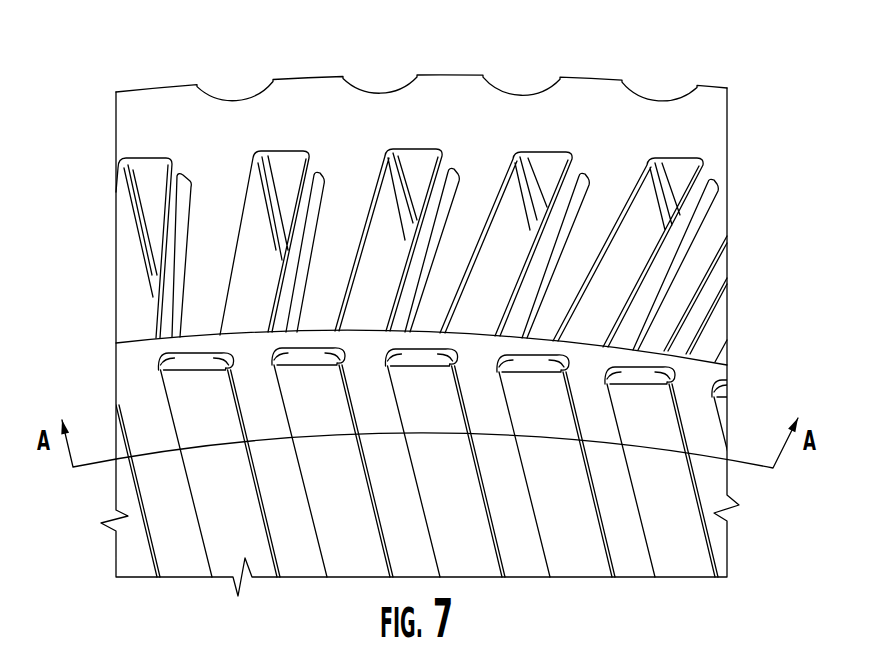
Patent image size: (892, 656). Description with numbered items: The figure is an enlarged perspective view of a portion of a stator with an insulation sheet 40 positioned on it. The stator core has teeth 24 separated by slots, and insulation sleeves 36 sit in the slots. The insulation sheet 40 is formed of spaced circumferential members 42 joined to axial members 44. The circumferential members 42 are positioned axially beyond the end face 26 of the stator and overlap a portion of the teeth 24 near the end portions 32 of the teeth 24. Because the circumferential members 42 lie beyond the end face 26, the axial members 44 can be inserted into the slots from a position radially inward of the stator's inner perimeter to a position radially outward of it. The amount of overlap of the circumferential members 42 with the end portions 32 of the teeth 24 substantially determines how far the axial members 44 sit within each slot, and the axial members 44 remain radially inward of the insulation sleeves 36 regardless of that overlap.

The teeth 24 is at (353, 190).
The end face 26 is at (683, 135).
The insulation sleeve 36 is at (687, 217).
The insulation sheet 40 is at (192, 318).
The circumferential member 42 is at (643, 357).
The end portion 32 is at (305, 360).
The axial member 44 is at (512, 527).